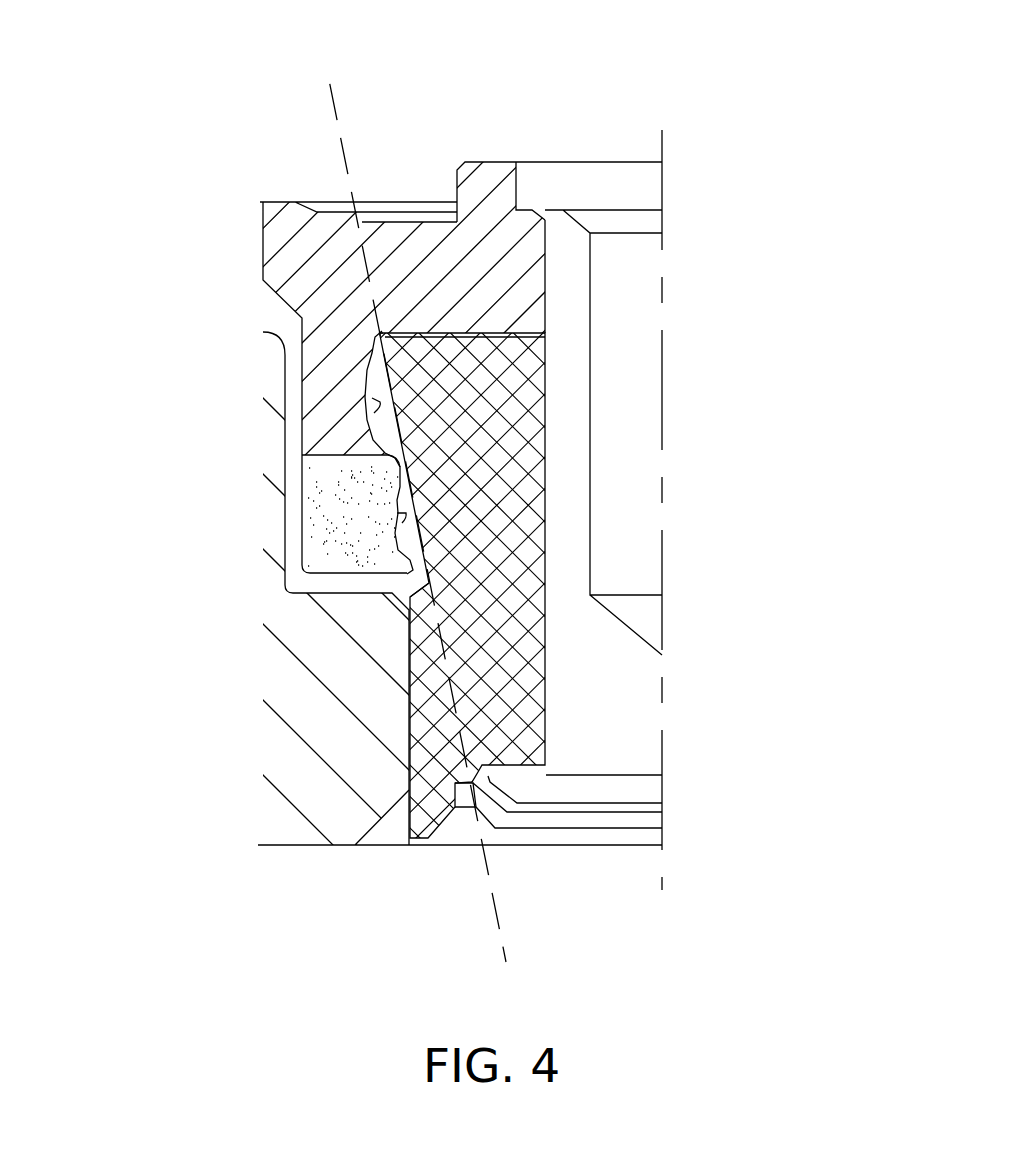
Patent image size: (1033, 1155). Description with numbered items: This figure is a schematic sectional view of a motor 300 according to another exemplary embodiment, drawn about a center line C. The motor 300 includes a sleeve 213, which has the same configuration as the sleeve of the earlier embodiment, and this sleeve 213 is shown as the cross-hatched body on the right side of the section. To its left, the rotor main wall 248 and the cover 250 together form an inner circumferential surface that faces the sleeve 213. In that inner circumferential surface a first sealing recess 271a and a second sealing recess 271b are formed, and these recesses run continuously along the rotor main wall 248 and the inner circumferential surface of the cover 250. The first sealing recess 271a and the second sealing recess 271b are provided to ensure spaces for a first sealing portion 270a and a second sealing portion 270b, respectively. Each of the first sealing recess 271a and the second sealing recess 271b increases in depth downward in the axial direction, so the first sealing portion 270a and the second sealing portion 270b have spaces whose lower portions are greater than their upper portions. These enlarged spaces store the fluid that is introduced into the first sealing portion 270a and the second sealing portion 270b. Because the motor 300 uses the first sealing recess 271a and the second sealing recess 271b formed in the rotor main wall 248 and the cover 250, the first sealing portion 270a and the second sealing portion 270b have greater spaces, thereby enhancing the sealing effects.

The motor 300 is at (703, 185).
The sleeve 213 is at (497, 563).
The rotor main wall 248 is at (327, 367).
The cover 250 is at (332, 477).
The first sealing portion 270a is at (374, 400).
The second sealing portion 270b is at (397, 515).
The first sealing recess 271a is at (373, 333).
The second sealing recess 271b is at (408, 608).
The center line C is at (411, 504).